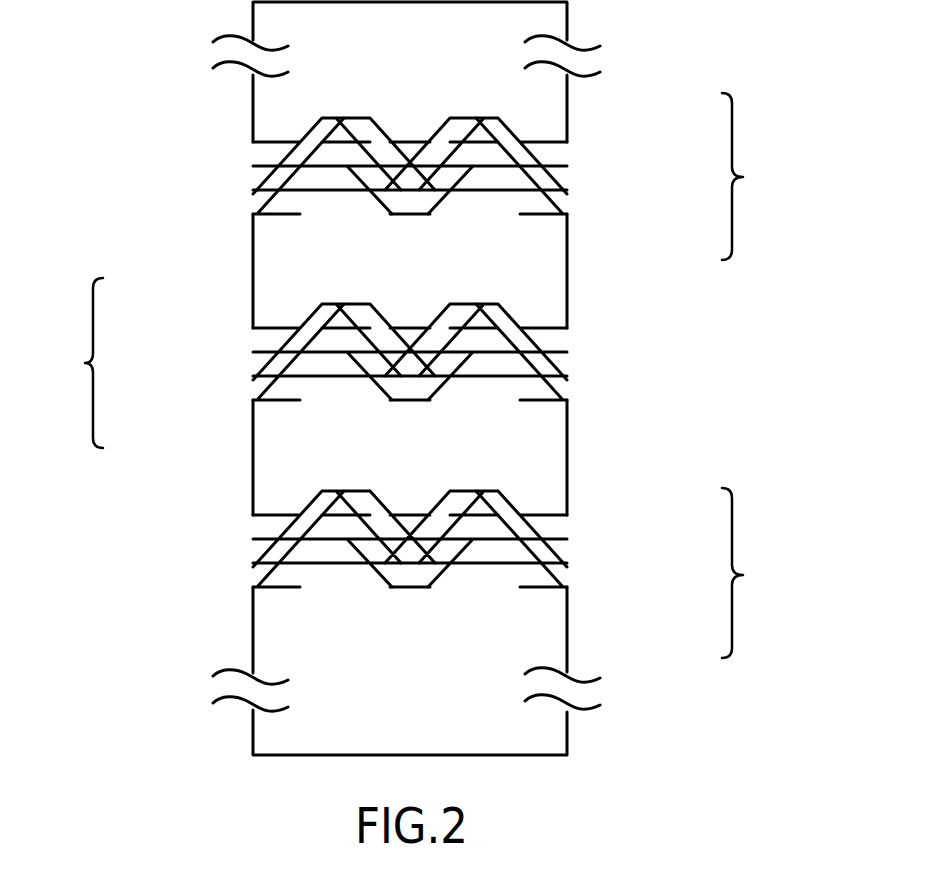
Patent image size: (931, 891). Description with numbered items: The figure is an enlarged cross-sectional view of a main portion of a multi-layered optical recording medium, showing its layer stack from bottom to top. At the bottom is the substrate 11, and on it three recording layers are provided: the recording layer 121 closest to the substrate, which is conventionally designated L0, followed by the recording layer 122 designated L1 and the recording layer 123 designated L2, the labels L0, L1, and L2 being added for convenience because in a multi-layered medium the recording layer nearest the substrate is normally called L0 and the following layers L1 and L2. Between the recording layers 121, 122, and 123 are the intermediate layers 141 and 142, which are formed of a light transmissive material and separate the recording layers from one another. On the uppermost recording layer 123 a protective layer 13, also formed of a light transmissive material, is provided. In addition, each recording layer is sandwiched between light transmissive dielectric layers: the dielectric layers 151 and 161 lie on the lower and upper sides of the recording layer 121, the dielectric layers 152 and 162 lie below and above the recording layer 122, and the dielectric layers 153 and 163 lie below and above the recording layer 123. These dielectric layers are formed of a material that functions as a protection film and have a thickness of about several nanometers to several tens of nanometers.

The substrate 11 is at (547, 638).
The protective layer 13 is at (557, 106).
The recording layer 121 is at (560, 545).
The recording layer 122 is at (262, 360).
The recording layer 123 is at (555, 172).
The intermediate layer 141 is at (547, 457).
The intermediate layer 142 is at (547, 278).
The light transmissive dielectric layer 151 is at (560, 573).
The light transmissive dielectric layer 152 is at (262, 385).
The light transmissive dielectric layer 153 is at (555, 200).
The light transmissive dielectric layer 161 is at (557, 525).
The light transmissive dielectric layer 162 is at (263, 353).
The light transmissive dielectric layer 163 is at (550, 166).
The recording layer designation L0 is at (782, 573).
The recording layer designation L1 is at (66, 363).
The recording layer designation L2 is at (764, 176).